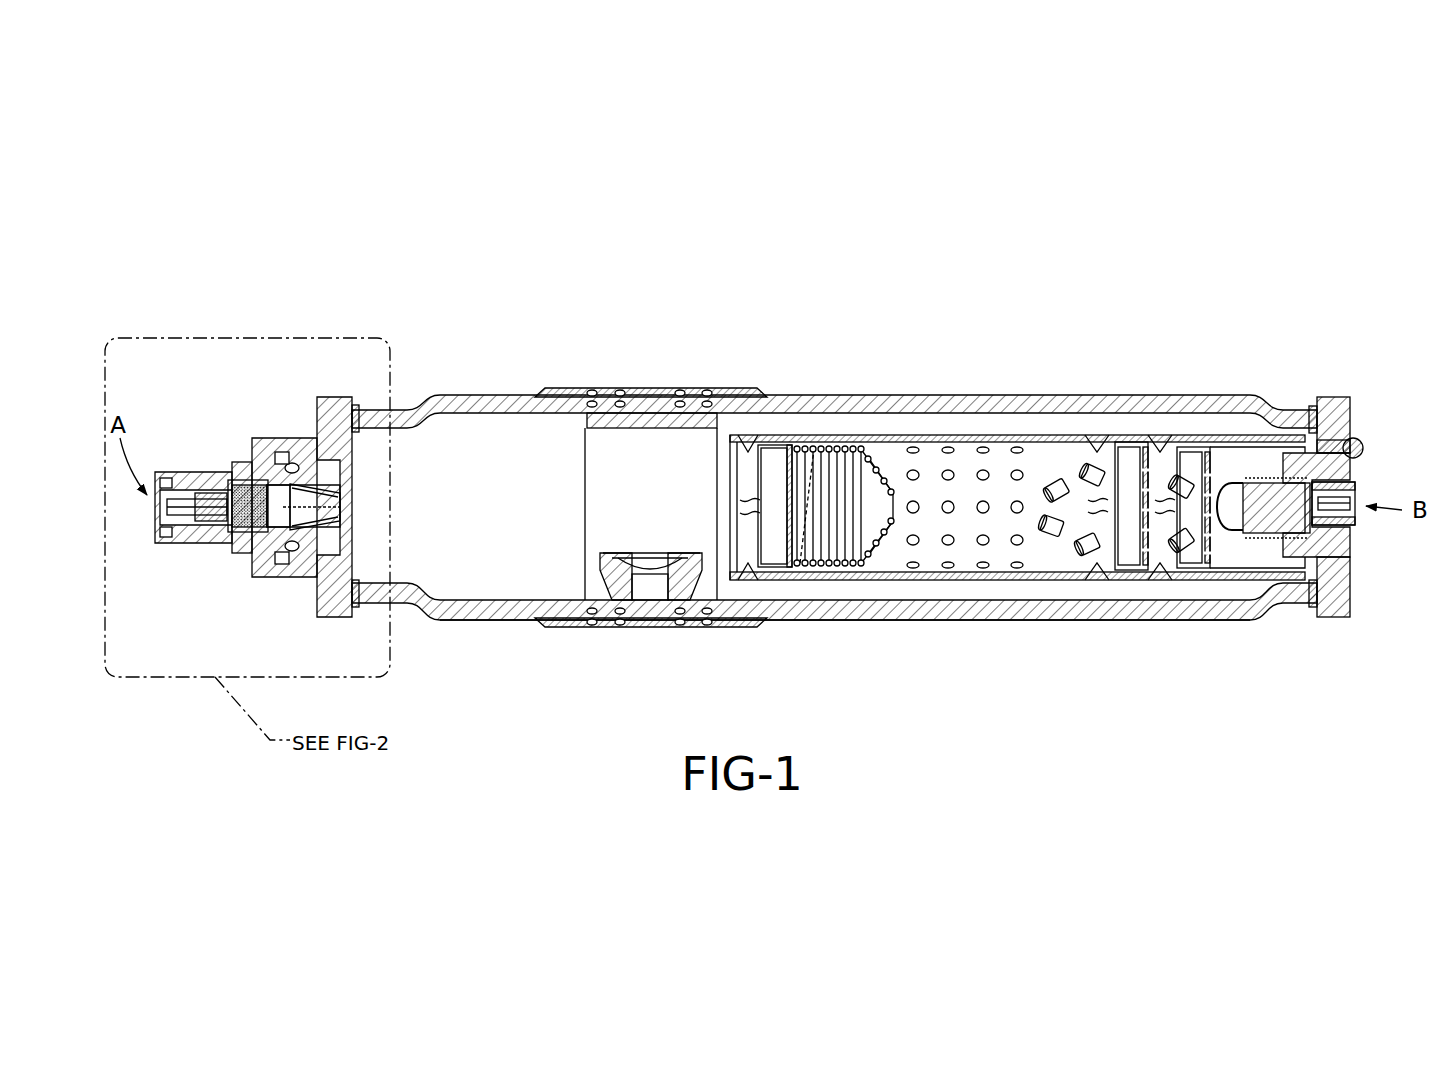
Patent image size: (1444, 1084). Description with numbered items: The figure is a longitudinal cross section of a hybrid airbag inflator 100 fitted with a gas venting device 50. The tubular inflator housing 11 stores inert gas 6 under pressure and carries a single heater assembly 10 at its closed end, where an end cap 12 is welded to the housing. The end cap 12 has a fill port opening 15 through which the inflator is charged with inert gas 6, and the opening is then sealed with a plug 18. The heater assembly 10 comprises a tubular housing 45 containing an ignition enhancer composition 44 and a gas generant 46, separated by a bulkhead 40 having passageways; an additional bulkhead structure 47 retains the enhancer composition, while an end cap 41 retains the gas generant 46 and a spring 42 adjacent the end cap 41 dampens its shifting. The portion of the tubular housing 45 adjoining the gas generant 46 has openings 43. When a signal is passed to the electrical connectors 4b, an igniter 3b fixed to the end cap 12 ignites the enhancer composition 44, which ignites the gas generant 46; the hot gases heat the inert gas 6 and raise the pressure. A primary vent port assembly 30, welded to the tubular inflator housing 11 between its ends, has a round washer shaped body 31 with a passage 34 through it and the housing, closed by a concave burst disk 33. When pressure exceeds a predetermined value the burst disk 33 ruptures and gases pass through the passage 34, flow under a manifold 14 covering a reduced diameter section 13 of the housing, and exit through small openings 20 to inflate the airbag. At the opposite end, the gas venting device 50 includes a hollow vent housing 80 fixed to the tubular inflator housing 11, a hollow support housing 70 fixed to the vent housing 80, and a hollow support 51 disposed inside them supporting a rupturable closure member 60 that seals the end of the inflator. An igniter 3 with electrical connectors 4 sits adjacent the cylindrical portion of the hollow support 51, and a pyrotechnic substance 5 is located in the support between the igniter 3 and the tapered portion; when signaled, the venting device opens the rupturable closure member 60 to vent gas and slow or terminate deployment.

The hybrid airbag inflator 100 is at (762, 312).
The inert gas 6 is at (436, 392).
The tubular inflator housing 11 is at (984, 622).
The gas venting device 50 is at (258, 388).
The hollow vent housing 80 is at (262, 433).
The hollow support housing 70 is at (181, 546).
The electrical connectors 4 is at (170, 503).
The igniter 3 is at (246, 528).
The pyrotechnic substance 5 is at (253, 514).
The hollow support 51 is at (318, 513).
The rupturable closure member 60 is at (338, 514).
The reduced diameter section 13 is at (607, 428).
The manifold 14 is at (648, 390).
The small openings 20 is at (692, 396).
The primary vent port assembly 30 is at (701, 591).
The washer shaped body 31 is at (606, 571).
The burst disk 33 is at (641, 582).
The passage 34 is at (660, 586).
The tubular housing 45 is at (965, 440).
The end cap 41 is at (792, 487).
The spring 42 is at (862, 497).
The openings 43 is at (911, 542).
The heater assembly 10 is at (1052, 468).
The gas generant 46 is at (1052, 527).
The bulkhead 40 is at (1124, 446).
The ignition enhancer composition 44 is at (1195, 451).
The bulkhead structure 47 is at (1211, 449).
The igniter 3b is at (1258, 499).
The end cap 12 is at (1338, 431).
The fill port opening 15 is at (1346, 445).
The plug 18 is at (1359, 456).
The electrical connectors 4b is at (1346, 518).